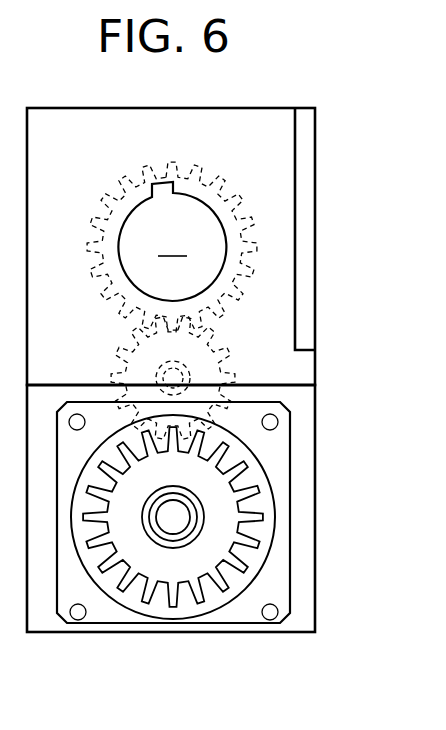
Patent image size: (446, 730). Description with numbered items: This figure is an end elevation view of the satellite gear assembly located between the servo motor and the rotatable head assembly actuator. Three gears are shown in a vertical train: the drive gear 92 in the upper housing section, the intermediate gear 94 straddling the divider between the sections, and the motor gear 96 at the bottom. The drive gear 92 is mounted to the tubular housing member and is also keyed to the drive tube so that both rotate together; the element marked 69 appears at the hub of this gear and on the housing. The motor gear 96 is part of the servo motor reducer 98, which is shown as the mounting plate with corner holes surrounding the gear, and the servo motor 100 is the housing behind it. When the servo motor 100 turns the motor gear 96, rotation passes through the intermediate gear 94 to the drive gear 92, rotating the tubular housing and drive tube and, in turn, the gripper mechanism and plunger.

The housing / reel hub 69 is at (243, 108).
The drive gear 92 is at (252, 228).
The intermediate gear 94 is at (232, 382).
The motor gear 96 is at (262, 478).
The servo motor reducer 98 is at (290, 558).
The servo motor 100 is at (315, 510).